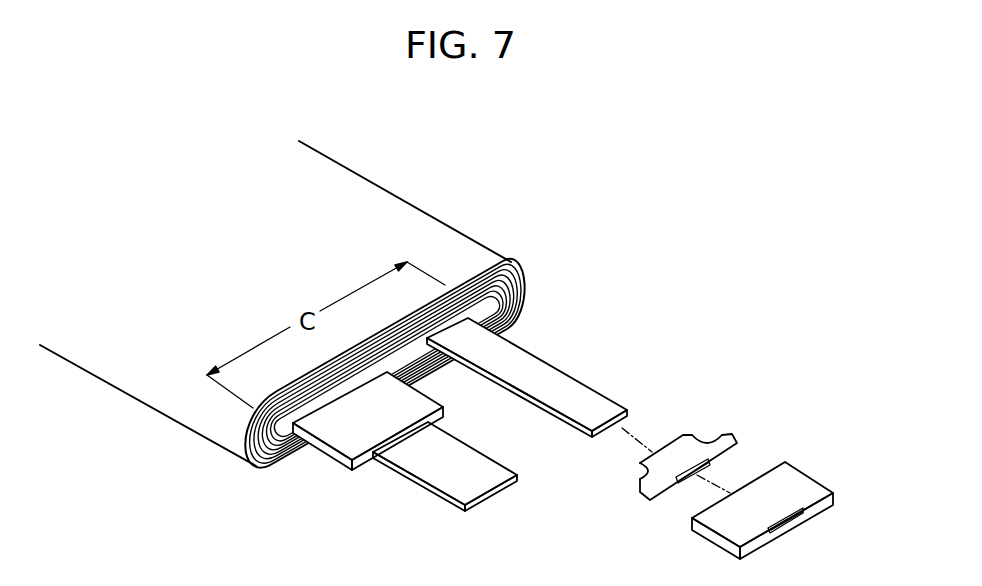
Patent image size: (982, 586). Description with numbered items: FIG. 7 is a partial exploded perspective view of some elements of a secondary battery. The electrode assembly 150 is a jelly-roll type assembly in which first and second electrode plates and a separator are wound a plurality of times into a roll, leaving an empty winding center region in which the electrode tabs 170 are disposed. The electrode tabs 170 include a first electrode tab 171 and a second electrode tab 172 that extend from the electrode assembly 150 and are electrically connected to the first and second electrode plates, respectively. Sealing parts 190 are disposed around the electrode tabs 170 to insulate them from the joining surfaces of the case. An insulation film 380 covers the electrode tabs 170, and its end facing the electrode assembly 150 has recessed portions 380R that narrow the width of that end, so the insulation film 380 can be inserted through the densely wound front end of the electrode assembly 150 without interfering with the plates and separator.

The electrode assembly 150 is at (430, 179).
The electrode tab 170 is at (508, 412).
The first electrode tab 171 is at (583, 392).
The second electrode tab 172 is at (447, 483).
The sealing part 190 is at (342, 447).
The insulation film 380 is at (645, 501).
The recessed portion 380R is at (708, 436).